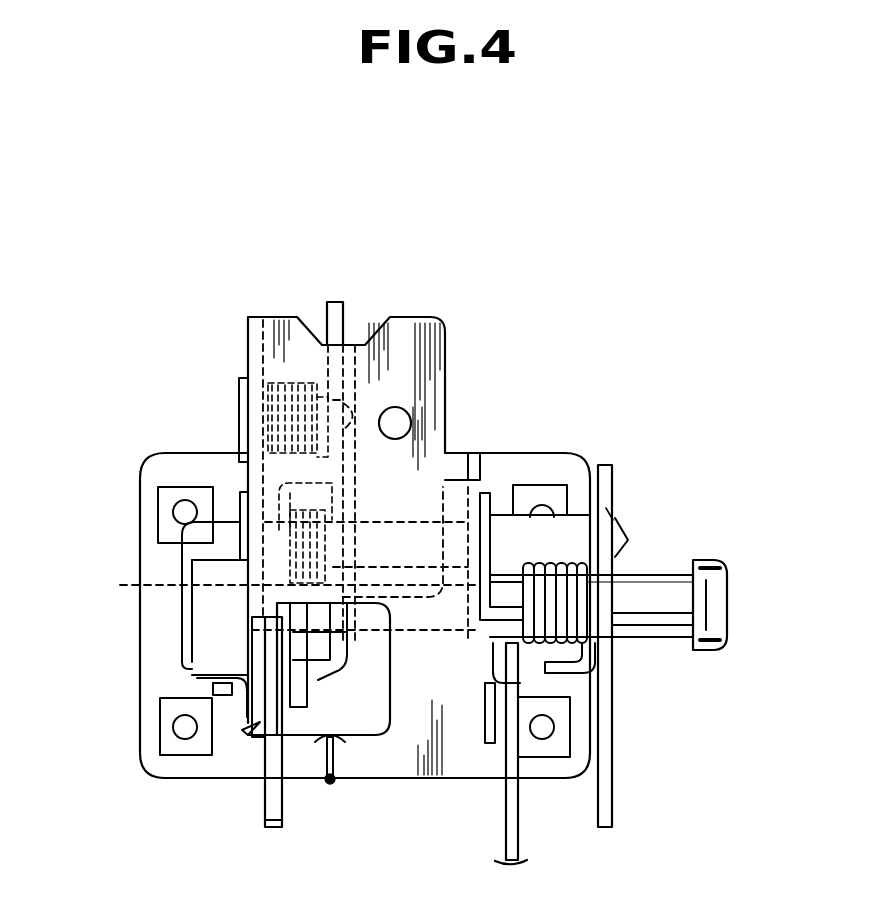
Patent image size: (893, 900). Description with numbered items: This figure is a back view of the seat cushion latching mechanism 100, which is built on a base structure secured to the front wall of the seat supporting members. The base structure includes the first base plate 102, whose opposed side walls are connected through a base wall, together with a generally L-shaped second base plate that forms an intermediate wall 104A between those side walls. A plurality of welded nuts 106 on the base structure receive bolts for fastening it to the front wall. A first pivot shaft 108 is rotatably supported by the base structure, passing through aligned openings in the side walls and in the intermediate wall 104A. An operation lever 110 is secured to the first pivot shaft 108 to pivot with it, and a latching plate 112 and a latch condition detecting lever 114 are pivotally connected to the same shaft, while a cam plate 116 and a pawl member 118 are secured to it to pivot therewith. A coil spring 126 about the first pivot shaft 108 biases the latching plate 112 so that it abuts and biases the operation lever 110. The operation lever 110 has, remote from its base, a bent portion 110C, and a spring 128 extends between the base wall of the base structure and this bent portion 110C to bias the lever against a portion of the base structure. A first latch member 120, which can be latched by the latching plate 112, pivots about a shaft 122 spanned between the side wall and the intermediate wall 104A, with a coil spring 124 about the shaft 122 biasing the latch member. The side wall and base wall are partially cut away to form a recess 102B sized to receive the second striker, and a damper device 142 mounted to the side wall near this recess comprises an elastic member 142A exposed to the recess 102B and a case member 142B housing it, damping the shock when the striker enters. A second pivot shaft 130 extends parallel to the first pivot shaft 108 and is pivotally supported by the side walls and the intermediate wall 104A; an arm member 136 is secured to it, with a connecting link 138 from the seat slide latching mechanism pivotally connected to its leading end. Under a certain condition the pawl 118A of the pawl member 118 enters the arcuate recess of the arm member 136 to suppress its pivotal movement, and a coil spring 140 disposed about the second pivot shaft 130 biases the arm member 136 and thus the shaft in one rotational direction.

The seat cushion latching mechanism 100 is at (535, 277).
The first base plate 102 is at (427, 312).
The recess 102B is at (247, 731).
The intermediate wall 104A is at (347, 307).
The welded nuts 106 is at (168, 492).
The first pivot shaft 108 is at (621, 528).
The operation lever 110 is at (272, 830).
The bent portion 110C is at (348, 745).
The latching plate 112 is at (341, 688).
The latch condition detecting lever 114 is at (283, 757).
The cam plate 116 is at (612, 735).
The pawl member 118 is at (485, 493).
The pawl 118A is at (514, 565).
The first latch member 120 is at (327, 303).
The shaft 122 is at (238, 395).
The coil spring 124 is at (290, 381).
The coil spring 126 is at (276, 585).
The spring 128 is at (328, 784).
The second pivot shaft 130 is at (727, 605).
The arm member 136 is at (500, 745).
The connecting link 138 is at (518, 847).
The coil spring 140 is at (596, 655).
The damper device 142 is at (178, 612).
The elastic member 142A is at (207, 638).
The case member 142B is at (190, 678).